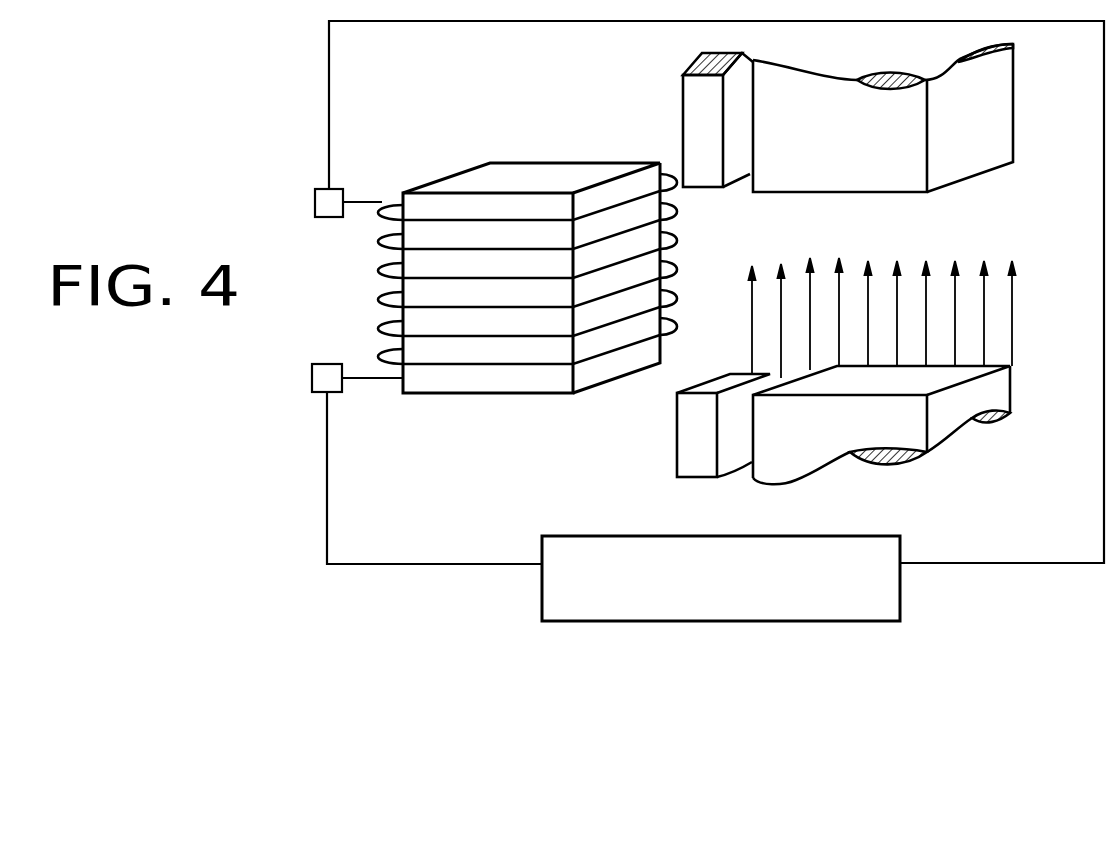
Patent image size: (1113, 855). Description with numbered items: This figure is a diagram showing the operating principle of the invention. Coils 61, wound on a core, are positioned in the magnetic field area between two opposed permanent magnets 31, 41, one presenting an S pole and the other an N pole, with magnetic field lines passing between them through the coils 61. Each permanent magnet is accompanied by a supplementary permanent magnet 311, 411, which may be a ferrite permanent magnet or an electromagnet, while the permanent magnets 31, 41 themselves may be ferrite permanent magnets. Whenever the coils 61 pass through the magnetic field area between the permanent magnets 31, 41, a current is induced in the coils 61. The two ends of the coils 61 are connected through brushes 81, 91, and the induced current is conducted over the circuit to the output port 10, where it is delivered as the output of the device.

The output port 10 is at (900, 605).
The permanent magnet 31 is at (1013, 130).
The supplementary permanent magnet 311 is at (692, 97).
The permanent magnet 41 is at (1012, 395).
The supplementary permanent magnet 411 is at (678, 443).
The coils 61 is at (533, 163).
The brush 81 is at (315, 193).
The brush 91 is at (313, 366).